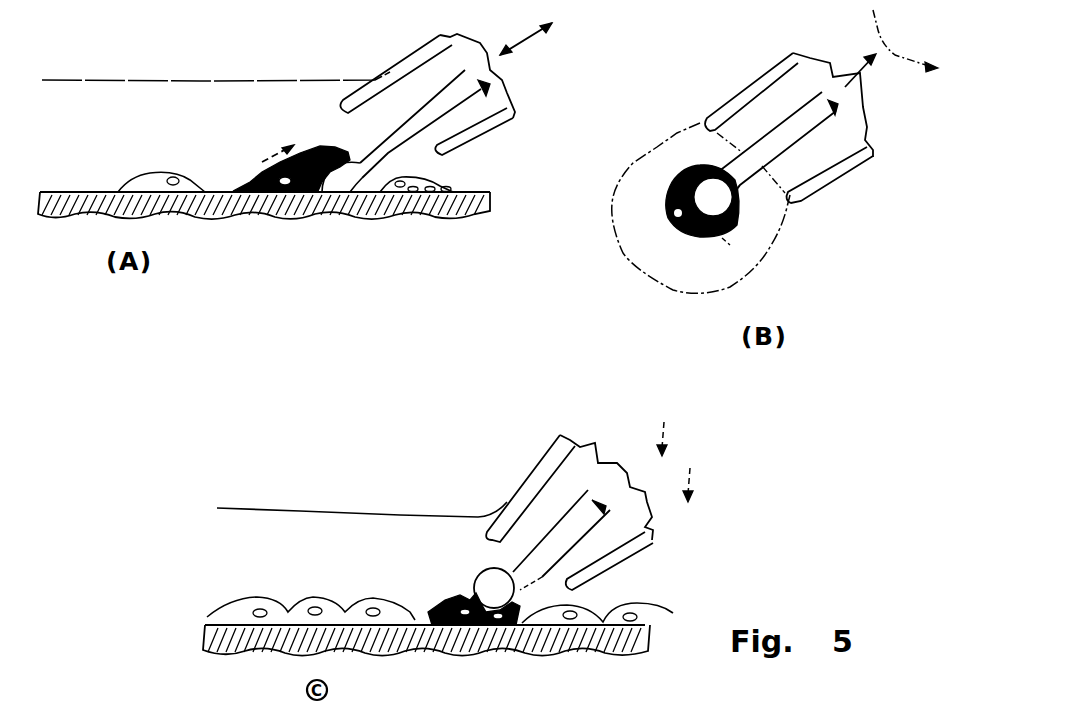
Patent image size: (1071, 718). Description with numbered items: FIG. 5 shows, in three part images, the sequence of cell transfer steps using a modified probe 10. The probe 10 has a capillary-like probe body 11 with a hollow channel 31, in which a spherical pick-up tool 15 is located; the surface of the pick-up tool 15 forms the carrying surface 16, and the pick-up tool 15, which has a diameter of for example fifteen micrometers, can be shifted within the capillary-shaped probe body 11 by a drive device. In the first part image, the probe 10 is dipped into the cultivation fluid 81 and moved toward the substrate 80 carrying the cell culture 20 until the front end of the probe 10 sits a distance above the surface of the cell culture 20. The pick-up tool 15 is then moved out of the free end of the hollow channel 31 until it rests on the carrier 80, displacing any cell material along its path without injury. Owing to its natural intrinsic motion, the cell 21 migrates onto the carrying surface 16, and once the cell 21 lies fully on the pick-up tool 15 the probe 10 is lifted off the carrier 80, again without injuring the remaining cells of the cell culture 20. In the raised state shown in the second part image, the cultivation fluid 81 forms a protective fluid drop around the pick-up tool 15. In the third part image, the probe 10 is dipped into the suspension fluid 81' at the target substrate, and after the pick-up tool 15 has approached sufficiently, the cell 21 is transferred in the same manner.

The probe 10 is at (380, 32).
The probe body 11 is at (485, 127).
The pick-up tool 15 is at (337, 180).
The carrying surface 16 is at (318, 193).
The cell culture 20 is at (73, 170).
The cell 21 is at (245, 175).
The hollow channel 31 is at (457, 123).
The substrate 80 is at (485, 204).
The cultivation fluid 81 is at (416, 169).
The suspension fluid 81' is at (362, 483).